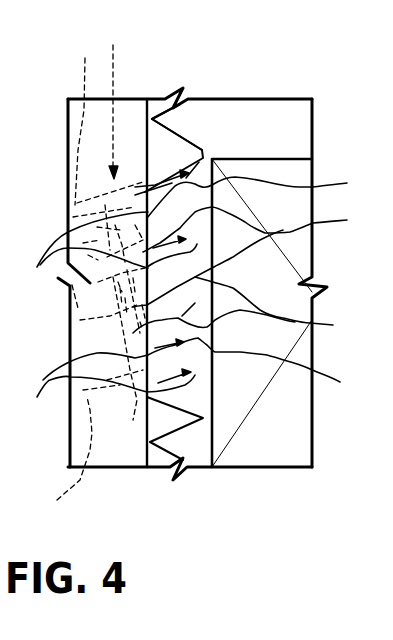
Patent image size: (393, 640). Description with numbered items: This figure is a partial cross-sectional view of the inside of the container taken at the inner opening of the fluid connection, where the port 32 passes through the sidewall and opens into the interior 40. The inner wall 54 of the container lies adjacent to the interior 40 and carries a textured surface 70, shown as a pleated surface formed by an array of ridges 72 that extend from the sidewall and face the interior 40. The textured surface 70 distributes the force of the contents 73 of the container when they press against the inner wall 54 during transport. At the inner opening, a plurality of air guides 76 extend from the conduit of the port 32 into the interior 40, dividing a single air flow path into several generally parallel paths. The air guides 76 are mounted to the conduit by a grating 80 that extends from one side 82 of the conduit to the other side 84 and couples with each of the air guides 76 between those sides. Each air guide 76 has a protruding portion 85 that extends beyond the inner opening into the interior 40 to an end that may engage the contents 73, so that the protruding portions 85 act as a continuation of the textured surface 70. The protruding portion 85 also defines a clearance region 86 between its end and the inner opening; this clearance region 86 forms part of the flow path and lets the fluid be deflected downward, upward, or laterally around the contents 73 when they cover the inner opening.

The port 32 is at (119, 98).
The interior 40 is at (277, 140).
The inner wall 54 is at (152, 92).
The textured surface 70 is at (185, 132).
The ridges 72 is at (205, 152).
The contents 73 is at (275, 433).
The air guides 76 is at (203, 292).
The grating 80 is at (140, 330).
The one side of the conduit 82 is at (62, 464).
The another side of the conduit 84 is at (77, 120).
The protruding portion 85 is at (252, 248).
The clearance region 86 is at (107, 317).